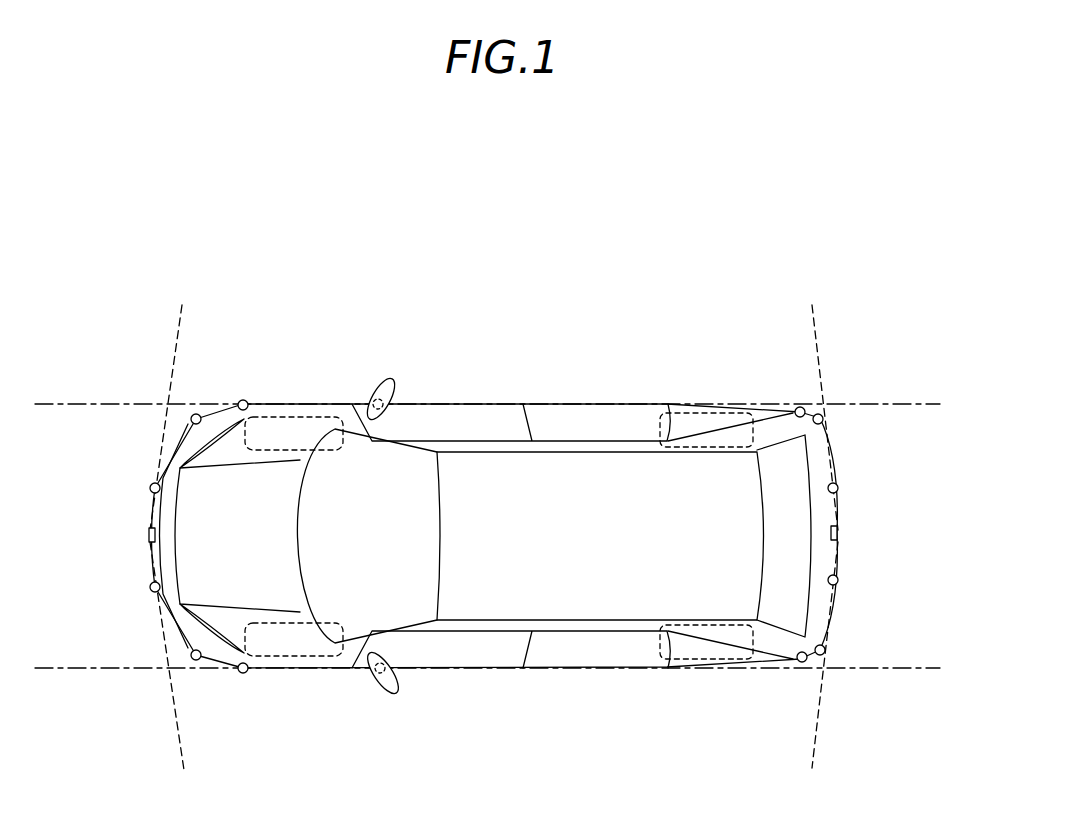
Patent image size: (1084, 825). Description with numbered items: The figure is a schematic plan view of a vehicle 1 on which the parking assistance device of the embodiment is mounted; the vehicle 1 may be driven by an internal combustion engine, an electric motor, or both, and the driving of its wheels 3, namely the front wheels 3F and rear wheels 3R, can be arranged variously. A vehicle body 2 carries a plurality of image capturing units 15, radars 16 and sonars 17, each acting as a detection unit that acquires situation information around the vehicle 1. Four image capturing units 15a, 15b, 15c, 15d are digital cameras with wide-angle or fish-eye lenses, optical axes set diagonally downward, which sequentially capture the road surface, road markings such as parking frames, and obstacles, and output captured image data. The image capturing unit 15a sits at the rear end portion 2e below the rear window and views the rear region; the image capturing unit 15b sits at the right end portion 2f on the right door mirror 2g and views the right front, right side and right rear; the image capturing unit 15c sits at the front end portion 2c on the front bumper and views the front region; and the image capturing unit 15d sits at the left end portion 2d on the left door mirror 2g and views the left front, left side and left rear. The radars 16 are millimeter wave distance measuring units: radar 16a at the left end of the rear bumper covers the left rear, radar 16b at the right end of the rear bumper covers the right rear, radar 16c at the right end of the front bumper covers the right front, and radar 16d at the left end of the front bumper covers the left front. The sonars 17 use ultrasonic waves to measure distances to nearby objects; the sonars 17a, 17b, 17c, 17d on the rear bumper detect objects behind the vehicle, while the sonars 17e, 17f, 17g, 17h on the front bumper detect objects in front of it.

The vehicle 1 is at (613, 311).
The vehicle body 2 is at (778, 400).
The front end portion 2c is at (149, 553).
The left end portion 2d is at (598, 668).
The rear end portion 2e is at (840, 555).
The right end portion 2f is at (609, 402).
The door mirror 2g is at (396, 379).
The wheels 3 is at (466, 536).
The front wheels 3F is at (292, 415).
The rear wheels 3R is at (708, 411).
The image capturing unit 15 is at (505, 556).
The image capturing unit 15a is at (838, 532).
The image capturing unit 15b is at (378, 396).
The image capturing unit 15c is at (147, 535).
The image capturing unit 15d is at (373, 678).
The radar 16 is at (511, 517).
The radar 16a is at (798, 661).
The radar 16b is at (800, 406).
The radar 16c is at (242, 399).
The radar 16d is at (243, 673).
The sonar 17 is at (502, 504).
The sonar 17a is at (825, 648).
The sonar 17b is at (838, 580).
The sonar 17c is at (838, 483).
The sonar 17d is at (823, 408).
The sonar 17e is at (190, 419).
The sonar 17f is at (150, 488).
The sonar 17g is at (150, 587).
The sonar 17h is at (191, 655).